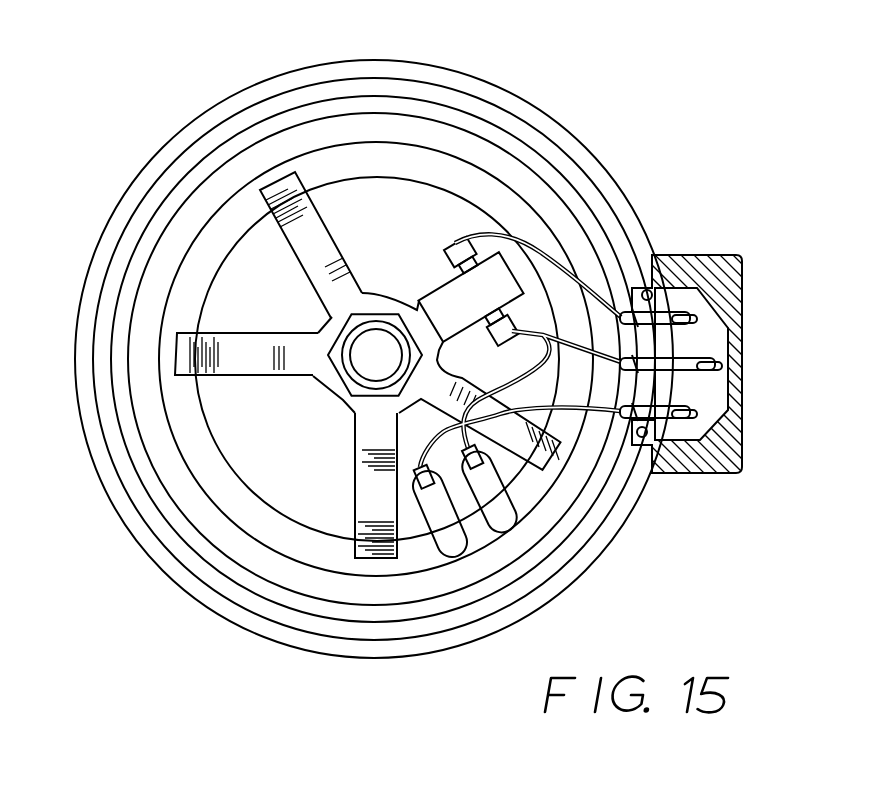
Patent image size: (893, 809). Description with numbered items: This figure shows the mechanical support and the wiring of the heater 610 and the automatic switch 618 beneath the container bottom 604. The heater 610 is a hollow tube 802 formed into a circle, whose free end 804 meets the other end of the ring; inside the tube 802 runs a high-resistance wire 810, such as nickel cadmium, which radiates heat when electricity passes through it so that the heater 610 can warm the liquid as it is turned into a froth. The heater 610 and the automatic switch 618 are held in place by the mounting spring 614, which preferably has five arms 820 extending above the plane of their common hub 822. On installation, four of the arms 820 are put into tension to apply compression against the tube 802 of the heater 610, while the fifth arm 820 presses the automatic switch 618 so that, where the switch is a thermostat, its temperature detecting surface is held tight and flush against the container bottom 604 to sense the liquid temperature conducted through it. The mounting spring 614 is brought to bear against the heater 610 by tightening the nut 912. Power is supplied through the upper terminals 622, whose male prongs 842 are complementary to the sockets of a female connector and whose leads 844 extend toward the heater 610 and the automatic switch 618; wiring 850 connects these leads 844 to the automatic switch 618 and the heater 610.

The container bottom 604 is at (548, 147).
The heater 610 is at (180, 275).
The mounting spring 614 is at (296, 390).
The automatic switch 618 is at (453, 303).
The upper terminals 622 is at (655, 314).
The tube 802 is at (413, 499).
The free end 804 is at (490, 462).
The wire 810 is at (440, 480).
The arms 820 is at (272, 273).
The common hub 822 is at (342, 396).
The male prongs 842 is at (702, 363).
The leads 844 is at (633, 413).
The wiring 850 is at (487, 232).
The nut 912 is at (343, 322).